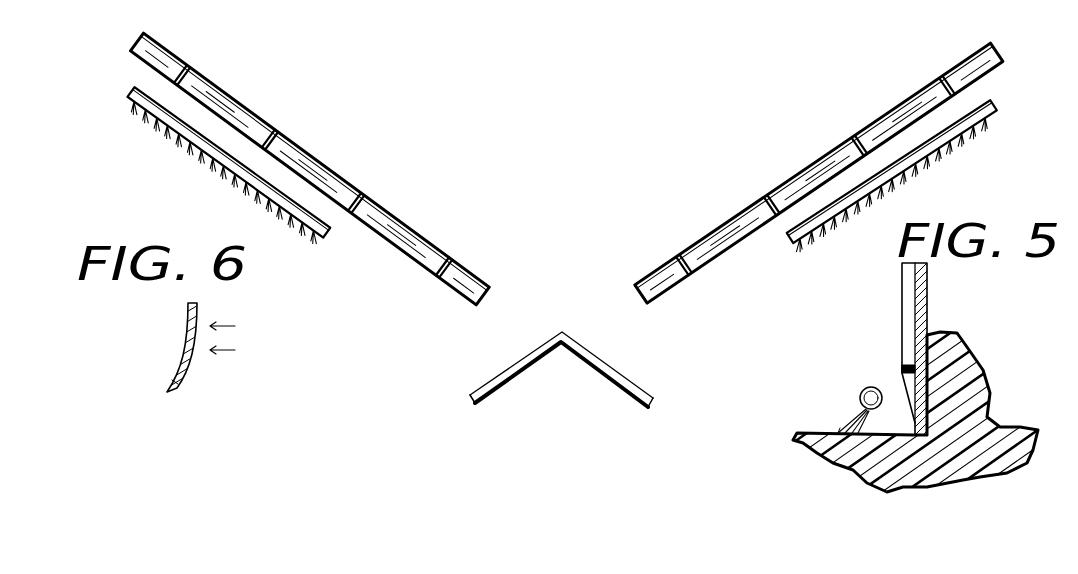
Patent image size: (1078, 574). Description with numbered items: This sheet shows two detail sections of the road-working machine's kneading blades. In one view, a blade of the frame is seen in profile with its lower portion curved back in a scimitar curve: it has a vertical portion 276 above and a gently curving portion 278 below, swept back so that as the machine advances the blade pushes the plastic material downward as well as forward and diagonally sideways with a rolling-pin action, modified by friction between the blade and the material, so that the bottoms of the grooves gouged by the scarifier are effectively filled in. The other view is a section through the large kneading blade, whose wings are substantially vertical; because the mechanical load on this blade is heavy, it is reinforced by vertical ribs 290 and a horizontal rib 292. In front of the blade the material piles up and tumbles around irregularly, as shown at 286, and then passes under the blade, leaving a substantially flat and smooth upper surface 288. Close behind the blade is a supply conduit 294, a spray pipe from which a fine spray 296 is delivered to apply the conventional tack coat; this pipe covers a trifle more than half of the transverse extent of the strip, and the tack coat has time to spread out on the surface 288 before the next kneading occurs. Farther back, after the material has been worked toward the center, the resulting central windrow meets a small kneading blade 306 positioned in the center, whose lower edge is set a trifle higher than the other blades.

In FIG. 6, the vertical portion 276 is at (188, 318).
In FIG. 6, the gently curving portion 278 is at (175, 365).
In FIG. 5, the piled material 286 is at (957, 372).
In FIG. 5, the upper surface 288 is at (843, 427).
In FIG. 5, the vertical ribs 290 is at (908, 315).
In FIG. 5, the horizontal rib 292 is at (903, 367).
In FIG. 5, the supply conduit 294 is at (877, 387).
In FIG. 5, the fine spray 296 is at (857, 408).
In FIG. 5, the small kneading blade 306 is at (603, 310).